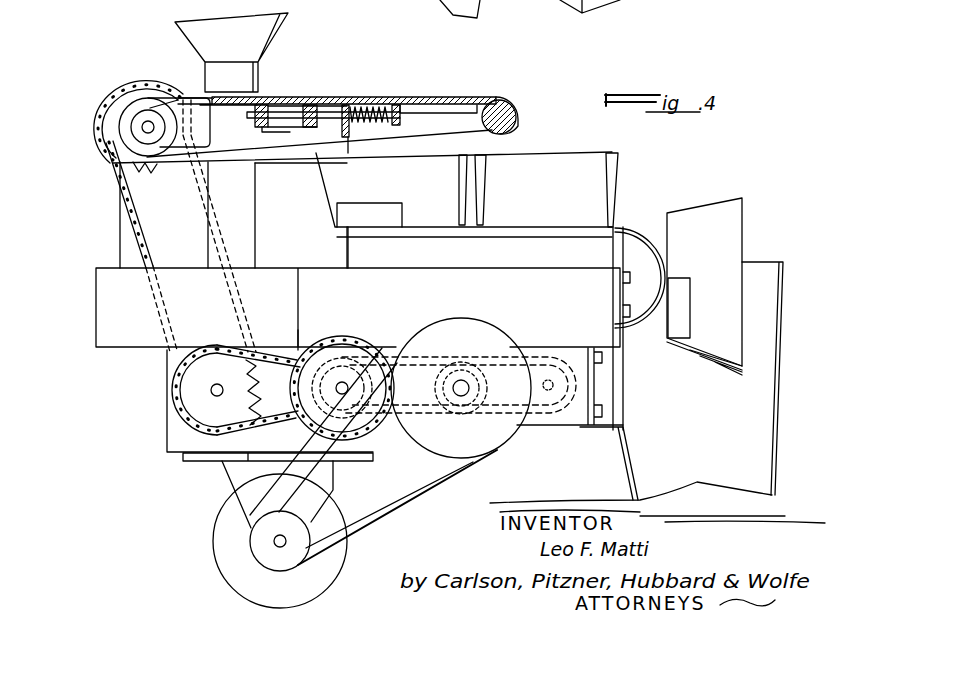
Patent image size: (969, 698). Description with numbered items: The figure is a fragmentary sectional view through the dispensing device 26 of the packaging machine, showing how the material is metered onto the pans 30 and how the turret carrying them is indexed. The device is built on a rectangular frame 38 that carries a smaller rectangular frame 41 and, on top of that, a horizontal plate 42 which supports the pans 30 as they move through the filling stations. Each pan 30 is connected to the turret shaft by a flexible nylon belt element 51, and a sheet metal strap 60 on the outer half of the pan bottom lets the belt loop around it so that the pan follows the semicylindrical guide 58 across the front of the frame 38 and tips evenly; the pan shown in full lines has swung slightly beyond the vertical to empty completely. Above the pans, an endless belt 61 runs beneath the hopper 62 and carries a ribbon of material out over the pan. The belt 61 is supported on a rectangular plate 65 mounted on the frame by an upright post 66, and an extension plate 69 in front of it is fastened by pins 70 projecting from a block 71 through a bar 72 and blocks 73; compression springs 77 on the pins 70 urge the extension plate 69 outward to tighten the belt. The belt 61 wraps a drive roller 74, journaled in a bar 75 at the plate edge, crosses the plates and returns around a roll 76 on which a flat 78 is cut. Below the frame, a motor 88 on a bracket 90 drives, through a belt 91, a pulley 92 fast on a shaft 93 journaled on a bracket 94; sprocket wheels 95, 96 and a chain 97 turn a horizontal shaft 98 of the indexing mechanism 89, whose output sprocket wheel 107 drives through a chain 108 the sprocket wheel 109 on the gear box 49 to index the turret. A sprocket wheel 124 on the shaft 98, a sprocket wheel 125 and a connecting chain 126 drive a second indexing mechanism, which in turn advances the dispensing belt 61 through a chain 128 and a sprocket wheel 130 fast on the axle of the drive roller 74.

The dispensing device 26 is at (728, 157).
The pan 30 is at (336, 187).
The rectangular frame 38 is at (115, 350).
The smaller rectangular frame 41 is at (346, 258).
The horizontal plate 42 is at (422, 236).
The gear box 49 is at (565, 430).
The element 51 is at (622, 233).
The semicylindrical guide 58 is at (640, 327).
The sheet metal strap 60 is at (338, 228).
The endless belt 61 is at (486, 139).
The hopper 62 is at (196, 34).
The rectangular plate 65 is at (293, 97).
The upright post 66 is at (256, 220).
The extension plate 69 is at (447, 97).
The pin 70 is at (333, 105).
The block 71 is at (400, 116).
The bar 72 is at (350, 133).
The block 73 is at (310, 120).
The drive roller 74 is at (123, 119).
The bar 75 is at (208, 148).
The roll 76 is at (516, 120).
The compression spring 77 is at (378, 97).
The flat 78 is at (514, 108).
The motor 88 is at (222, 547).
The indexing mechanism 89 is at (160, 431).
The bracket 90 is at (227, 487).
The belt 91 is at (420, 492).
The pulley 92 is at (492, 452).
The shaft 93 is at (462, 398).
The bracket 94 is at (168, 452).
The sprocket wheel 95 is at (450, 393).
The sprocket wheel 96 is at (443, 388).
The chain 97 is at (372, 352).
The horizontal shaft 98 is at (226, 378).
The sprocket wheel 107 is at (433, 358).
The chain 108 is at (481, 358).
The sprocket wheel 109 is at (524, 389).
The sprocket wheel 124 is at (252, 396).
The sprocket wheel 125 is at (222, 412).
The connecting chain 126 is at (285, 422).
The chain 128 is at (128, 234).
The sprocket wheel 130 is at (158, 165).